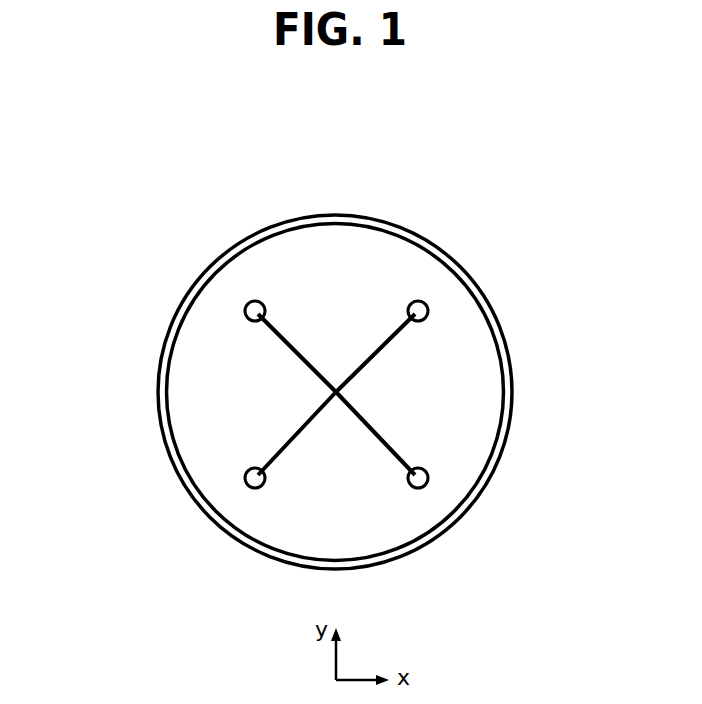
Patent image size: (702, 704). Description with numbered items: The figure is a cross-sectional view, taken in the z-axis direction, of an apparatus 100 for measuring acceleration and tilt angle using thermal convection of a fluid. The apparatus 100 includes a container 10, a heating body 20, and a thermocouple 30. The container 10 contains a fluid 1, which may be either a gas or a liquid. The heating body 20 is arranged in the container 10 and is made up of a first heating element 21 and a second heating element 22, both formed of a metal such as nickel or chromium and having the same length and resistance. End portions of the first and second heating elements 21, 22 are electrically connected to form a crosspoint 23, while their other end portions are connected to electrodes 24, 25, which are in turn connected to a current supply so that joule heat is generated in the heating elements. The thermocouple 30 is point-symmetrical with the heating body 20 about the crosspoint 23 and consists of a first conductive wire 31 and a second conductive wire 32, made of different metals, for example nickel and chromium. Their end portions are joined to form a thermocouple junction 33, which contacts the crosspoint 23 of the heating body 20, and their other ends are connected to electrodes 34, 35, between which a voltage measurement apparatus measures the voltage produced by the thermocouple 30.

The apparatus for measuring acceleration and tilt angle 100 is at (165, 191).
The fluid 1 is at (332, 280).
The container 10 is at (348, 213).
The heating body 20 is at (262, 333).
The first heating element 21 is at (300, 356).
The second heating element 22 is at (391, 340).
The crosspoint 23 is at (480, 378).
The electrode 24 is at (247, 305).
The electrode 25 is at (425, 302).
The thermocouple 30 is at (306, 460).
The first conductive wire 31 is at (300, 428).
The second conductive wire 32 is at (391, 444).
The thermocouple junction 33 is at (340, 391).
The electrode 34 is at (253, 488).
The electrode 35 is at (422, 489).